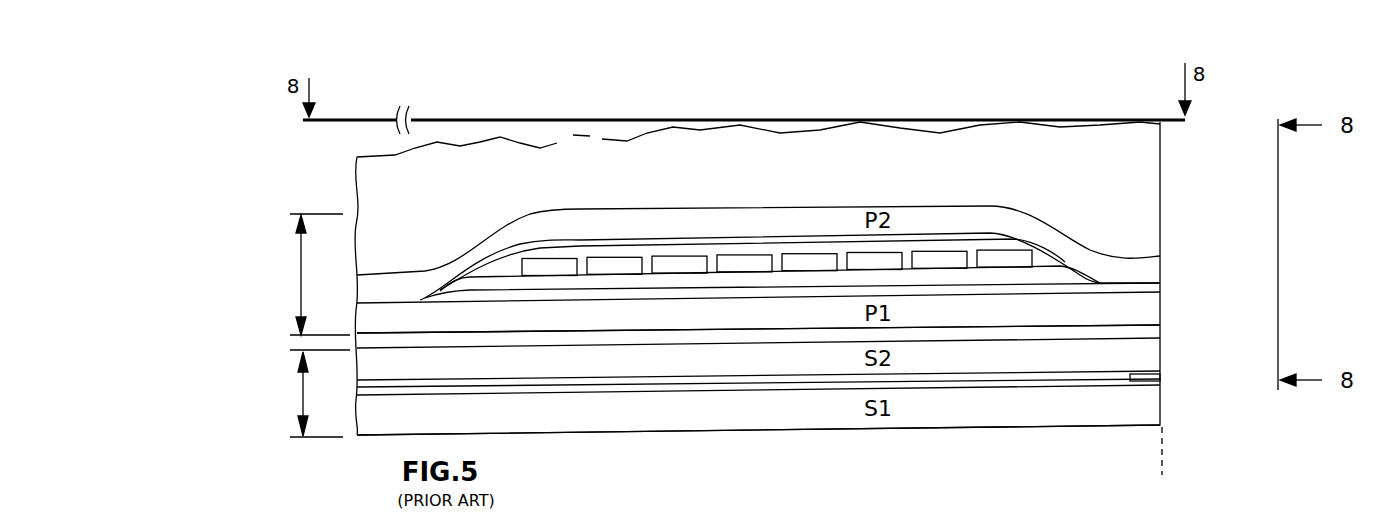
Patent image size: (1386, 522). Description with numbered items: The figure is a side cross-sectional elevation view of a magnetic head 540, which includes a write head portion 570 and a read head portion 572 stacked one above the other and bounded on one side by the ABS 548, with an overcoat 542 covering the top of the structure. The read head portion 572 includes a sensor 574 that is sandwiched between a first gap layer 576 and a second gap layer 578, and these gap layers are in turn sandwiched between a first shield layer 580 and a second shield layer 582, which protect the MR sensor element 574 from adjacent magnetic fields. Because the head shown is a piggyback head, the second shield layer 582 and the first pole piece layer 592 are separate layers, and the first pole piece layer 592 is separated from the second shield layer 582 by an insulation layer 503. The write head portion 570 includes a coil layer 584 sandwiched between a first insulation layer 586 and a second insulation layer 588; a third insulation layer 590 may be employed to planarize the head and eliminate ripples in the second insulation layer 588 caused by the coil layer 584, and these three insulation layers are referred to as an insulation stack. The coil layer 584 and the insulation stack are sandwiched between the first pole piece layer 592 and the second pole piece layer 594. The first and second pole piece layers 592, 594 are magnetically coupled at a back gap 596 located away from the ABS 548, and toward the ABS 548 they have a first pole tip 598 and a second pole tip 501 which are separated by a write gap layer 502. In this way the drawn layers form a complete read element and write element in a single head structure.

The magnetic head 540 is at (327, 161).
The overcoat layer 542 is at (1145, 157).
The second pole piece layer 594 is at (943, 217).
The back gap 596 is at (392, 273).
The third insulation layer 590 is at (590, 243).
The second insulation layer 588 is at (1047, 258).
The coil layer 584 is at (744, 262).
The first insulation layer 586 is at (715, 283).
The write gap layer 502 is at (1160, 288).
The second pole tip 501 is at (1153, 266).
The first pole tip 598 is at (1160, 311).
The first pole piece layer 592 is at (1078, 315).
The insulation layer 503 is at (647, 344).
The second shield layer 582 is at (1017, 360).
The second gap layer 578 is at (793, 374).
The first gap layer 576 is at (823, 390).
The first shield layer 580 is at (953, 412).
The sensor 574 is at (1158, 375).
The air bearing surface ABS 548 is at (1162, 470).
The write head portion 570 is at (300, 279).
The read head portion 572 is at (300, 400).